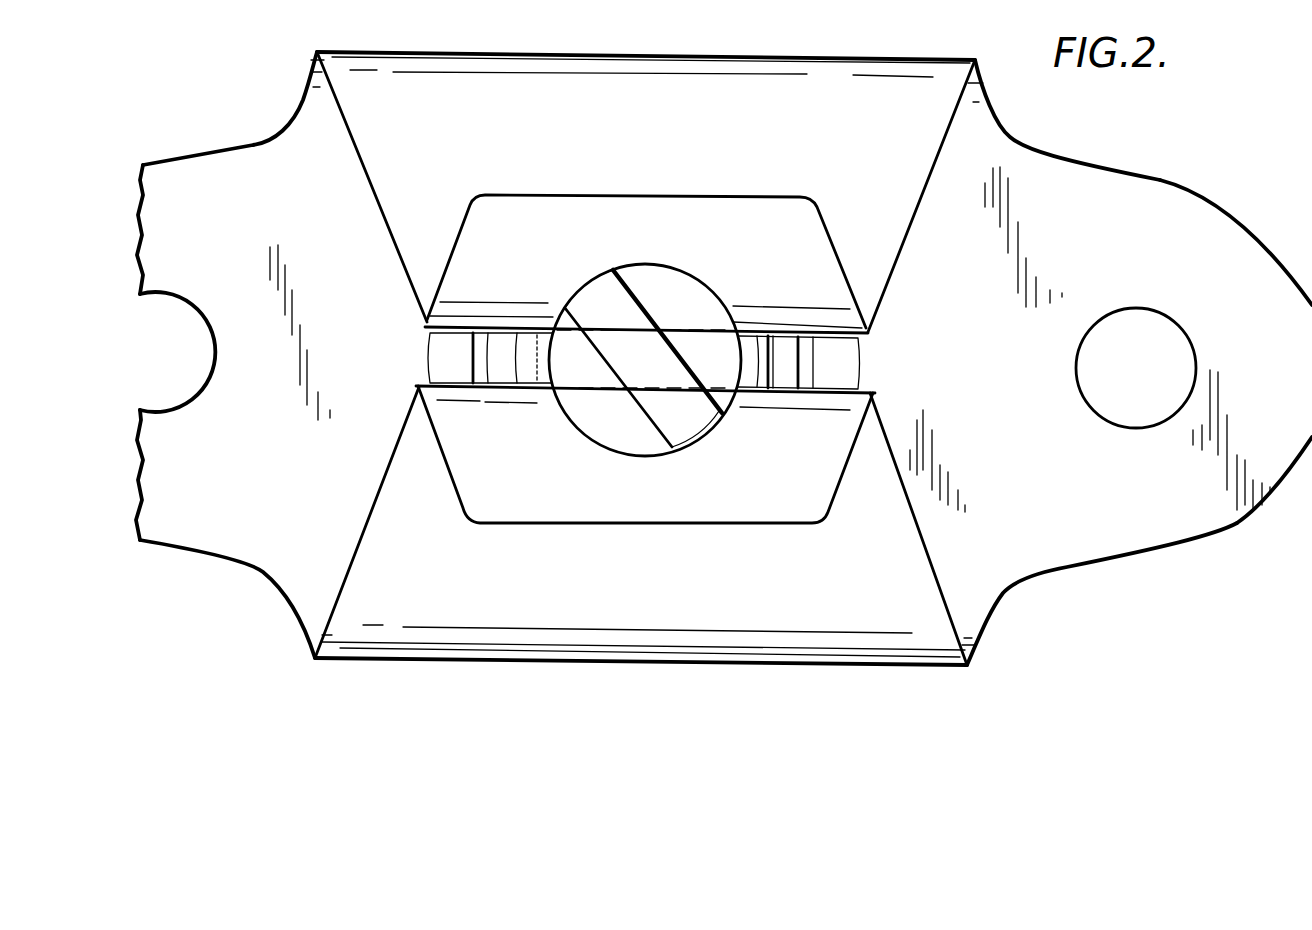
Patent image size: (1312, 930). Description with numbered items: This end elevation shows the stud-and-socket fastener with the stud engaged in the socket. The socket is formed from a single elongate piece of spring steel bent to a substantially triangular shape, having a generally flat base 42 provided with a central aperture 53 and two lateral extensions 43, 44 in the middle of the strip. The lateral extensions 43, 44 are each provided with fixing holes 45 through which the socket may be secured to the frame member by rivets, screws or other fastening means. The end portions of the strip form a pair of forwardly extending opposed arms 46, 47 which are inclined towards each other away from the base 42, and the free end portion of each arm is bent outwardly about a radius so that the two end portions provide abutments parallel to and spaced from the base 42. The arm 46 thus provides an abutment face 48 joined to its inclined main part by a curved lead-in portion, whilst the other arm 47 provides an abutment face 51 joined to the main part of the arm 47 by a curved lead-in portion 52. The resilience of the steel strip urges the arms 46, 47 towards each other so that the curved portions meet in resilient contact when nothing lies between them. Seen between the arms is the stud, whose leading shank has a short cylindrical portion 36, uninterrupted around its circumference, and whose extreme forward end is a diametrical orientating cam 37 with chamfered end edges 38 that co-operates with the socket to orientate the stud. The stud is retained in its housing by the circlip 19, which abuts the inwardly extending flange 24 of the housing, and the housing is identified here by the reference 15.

The mounting plate 15 is at (578, 30).
The circlip 19 is at (750, 342).
The inwardly extending flange 24 is at (787, 378).
The short cylindrical portion 36 is at (686, 300).
The diametrical orientating cam 37 is at (597, 312).
The chamfer 38 is at (693, 437).
The base 42 is at (300, 152).
The lateral extension 43 is at (180, 523).
The lateral extension 44 is at (1038, 560).
The fixing holes 45 is at (183, 310).
The arm 46 is at (910, 544).
The arm 47 is at (927, 153).
The abutment face 48 is at (790, 515).
The abutment face 51 is at (816, 210).
The curved lead-in portion 52 is at (456, 337).
The central aperture 53 is at (480, 368).